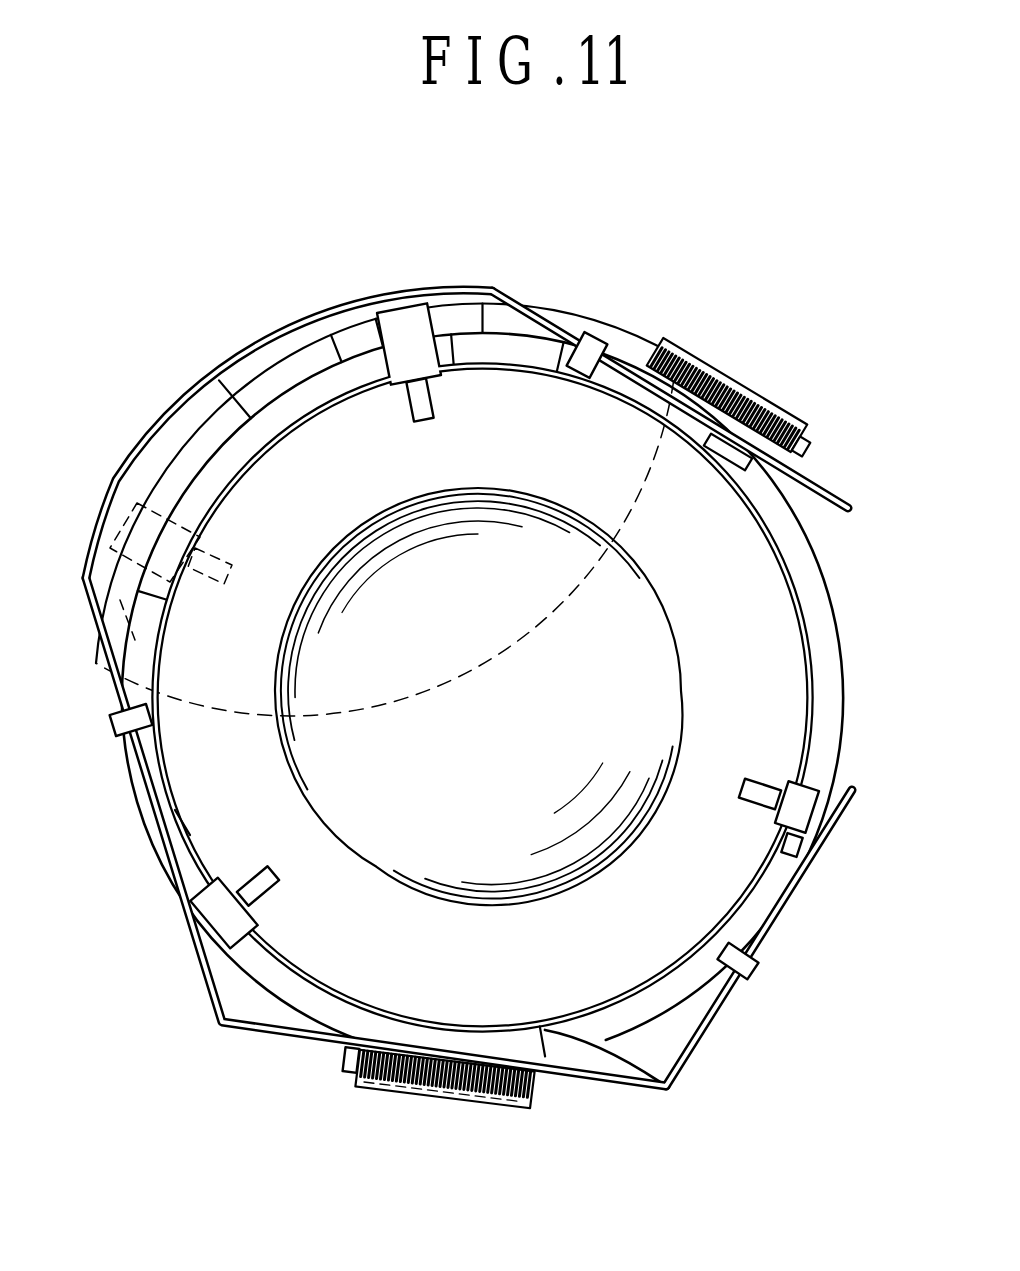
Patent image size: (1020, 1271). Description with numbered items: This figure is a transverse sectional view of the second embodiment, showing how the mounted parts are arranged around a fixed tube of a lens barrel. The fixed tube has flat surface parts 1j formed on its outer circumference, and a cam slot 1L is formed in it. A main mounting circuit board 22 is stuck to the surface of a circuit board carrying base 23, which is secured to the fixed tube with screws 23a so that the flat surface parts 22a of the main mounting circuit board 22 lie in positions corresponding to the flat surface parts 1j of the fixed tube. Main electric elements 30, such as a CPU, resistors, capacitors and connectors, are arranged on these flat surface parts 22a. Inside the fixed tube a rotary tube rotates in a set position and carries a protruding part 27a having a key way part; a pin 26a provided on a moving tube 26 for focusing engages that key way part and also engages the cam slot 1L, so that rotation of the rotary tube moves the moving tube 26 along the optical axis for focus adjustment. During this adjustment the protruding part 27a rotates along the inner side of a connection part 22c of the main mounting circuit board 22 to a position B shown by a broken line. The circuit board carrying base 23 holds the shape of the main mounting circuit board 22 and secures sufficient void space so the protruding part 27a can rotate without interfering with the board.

The cam slot 1L is at (250, 437).
The flat surface parts 1j is at (710, 458).
The moving tube 26 is at (752, 610).
The pin 26a is at (405, 345).
The protruding part 27a is at (352, 340).
The main mounting circuit board 22 is at (850, 800).
The flat surface parts 22a is at (560, 318).
The connection part 22c is at (253, 342).
The circuit board carrying base 23 is at (832, 782).
The screws 23a is at (118, 734).
The main electric elements 30 is at (715, 363).
The position B is at (93, 548).